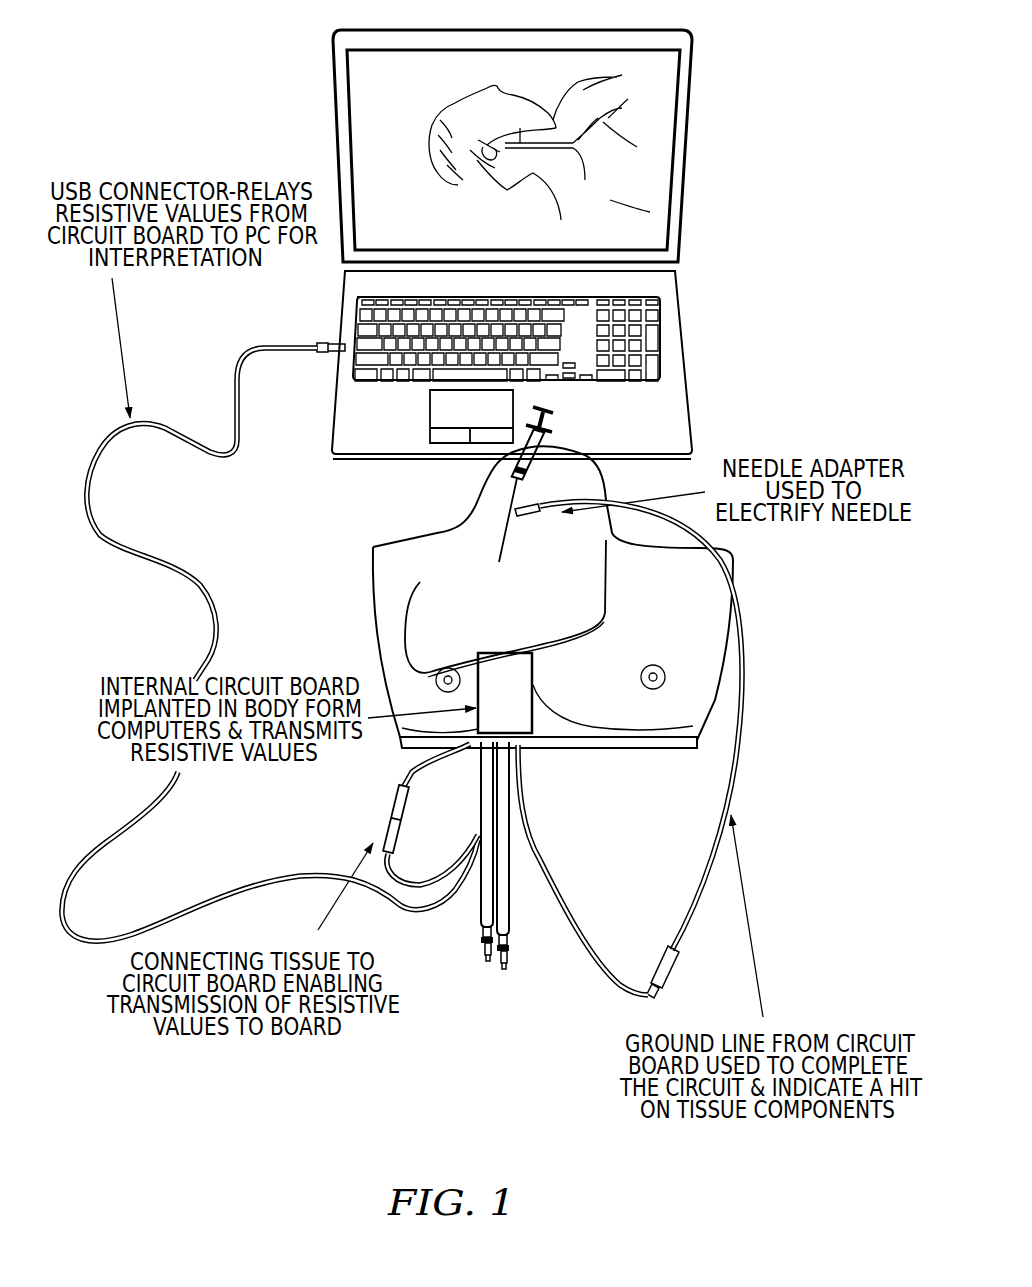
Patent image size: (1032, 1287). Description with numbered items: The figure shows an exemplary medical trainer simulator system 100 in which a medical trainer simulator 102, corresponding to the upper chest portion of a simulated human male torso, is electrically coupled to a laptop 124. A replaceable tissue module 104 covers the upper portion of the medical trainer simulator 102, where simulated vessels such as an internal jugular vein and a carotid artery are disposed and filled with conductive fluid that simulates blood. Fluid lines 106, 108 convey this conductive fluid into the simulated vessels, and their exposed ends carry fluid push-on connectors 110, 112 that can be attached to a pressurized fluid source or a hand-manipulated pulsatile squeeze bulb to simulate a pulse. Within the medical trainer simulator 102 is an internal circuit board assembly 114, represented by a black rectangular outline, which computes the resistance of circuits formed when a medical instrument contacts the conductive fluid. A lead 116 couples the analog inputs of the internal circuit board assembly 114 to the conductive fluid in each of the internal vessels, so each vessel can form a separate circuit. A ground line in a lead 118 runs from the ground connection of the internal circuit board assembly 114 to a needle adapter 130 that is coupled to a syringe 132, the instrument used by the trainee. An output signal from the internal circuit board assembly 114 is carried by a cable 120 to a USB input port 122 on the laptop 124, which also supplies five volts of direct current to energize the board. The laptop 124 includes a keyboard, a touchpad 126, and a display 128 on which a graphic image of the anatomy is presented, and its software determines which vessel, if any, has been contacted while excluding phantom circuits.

The medical trainer simulator system 100 is at (192, 1070).
The medical trainer simulator 102 is at (372, 590).
The replaceable tissue module 104 is at (603, 584).
The fluid line 106 is at (515, 890).
The fluid line 108 is at (483, 907).
The fluid push-on connector 110 is at (517, 947).
The fluid push-on connector 112 is at (483, 947).
The internal circuit board assembly 114 is at (535, 670).
The lead 116 is at (397, 806).
The lead 118 is at (748, 662).
The cable 120 is at (68, 908).
The USB input port 122 is at (330, 340).
The laptop 124 is at (658, 322).
The touchpad 126 is at (438, 417).
The display 128 is at (658, 162).
The needle adapter 130 is at (523, 512).
The syringe 132 is at (500, 548).